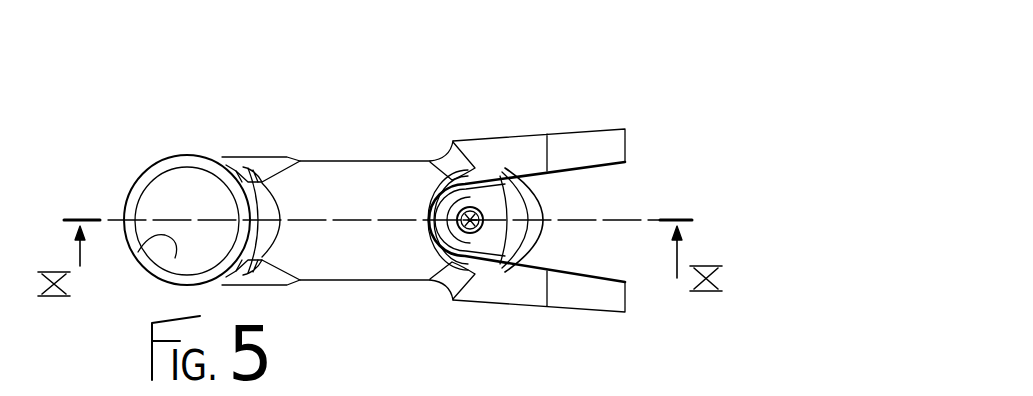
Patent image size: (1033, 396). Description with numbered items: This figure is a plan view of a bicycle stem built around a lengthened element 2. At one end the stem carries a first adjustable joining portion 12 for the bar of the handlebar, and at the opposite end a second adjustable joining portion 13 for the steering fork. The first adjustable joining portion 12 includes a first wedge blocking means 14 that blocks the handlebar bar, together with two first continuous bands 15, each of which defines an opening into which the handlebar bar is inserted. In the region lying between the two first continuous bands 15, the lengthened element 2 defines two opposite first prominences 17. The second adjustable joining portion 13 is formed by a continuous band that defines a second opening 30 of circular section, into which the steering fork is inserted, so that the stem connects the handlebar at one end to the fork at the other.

The lengthened element 2 is at (360, 258).
The first adjustable joining portion 12 is at (570, 200).
The second adjustable joining portion 13 is at (151, 147).
The first wedge blocking means 14 is at (488, 206).
The first continuous band 15 is at (610, 146).
The first prominences 17 is at (437, 250).
The second opening 30 is at (174, 265).